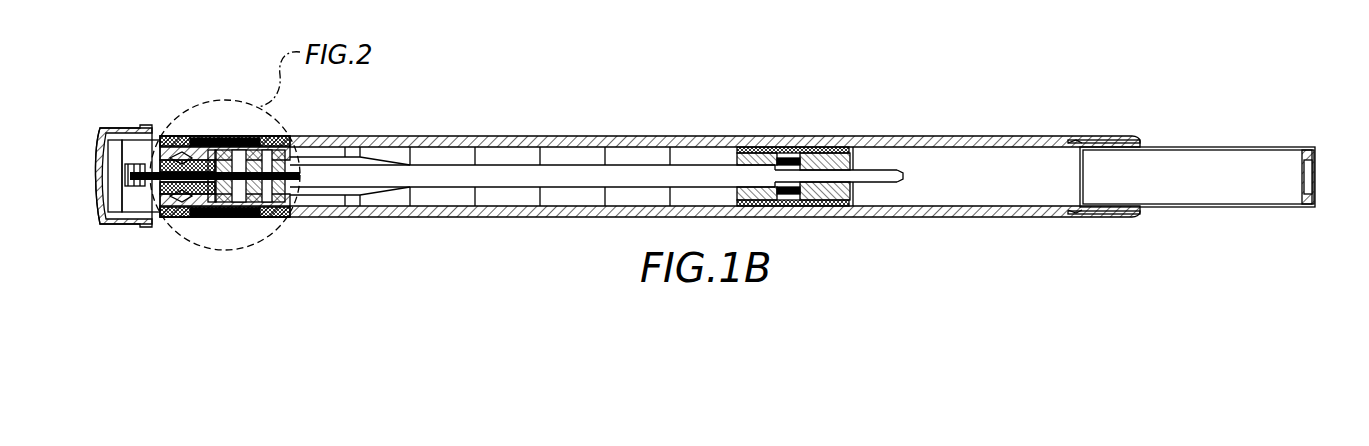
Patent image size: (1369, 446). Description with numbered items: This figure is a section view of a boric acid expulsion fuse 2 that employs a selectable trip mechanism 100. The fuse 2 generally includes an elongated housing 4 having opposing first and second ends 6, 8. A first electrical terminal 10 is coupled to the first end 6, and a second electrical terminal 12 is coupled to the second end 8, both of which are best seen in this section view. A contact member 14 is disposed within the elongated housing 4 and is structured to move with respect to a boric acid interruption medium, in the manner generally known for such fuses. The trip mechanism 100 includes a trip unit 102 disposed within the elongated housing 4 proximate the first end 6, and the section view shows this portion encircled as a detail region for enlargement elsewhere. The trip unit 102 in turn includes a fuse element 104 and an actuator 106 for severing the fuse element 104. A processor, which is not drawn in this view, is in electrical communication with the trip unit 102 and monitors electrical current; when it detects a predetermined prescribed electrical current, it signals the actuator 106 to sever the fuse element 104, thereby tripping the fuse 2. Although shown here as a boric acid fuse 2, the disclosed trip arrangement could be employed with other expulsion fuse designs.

The boric acid expulsion fuse 2 is at (490, 265).
The elongated housing 4 is at (833, 140).
The first end 6 is at (215, 255).
The second end 8 is at (1127, 124).
The first electrical terminal 10 is at (123, 128).
The second electrical terminal 12 is at (1208, 147).
The contact member 14 is at (515, 176).
The selectable trip mechanism 100 is at (205, 116).
The trip unit 102 is at (232, 134).
The fuse element 104 is at (258, 222).
The actuator 106 is at (176, 222).